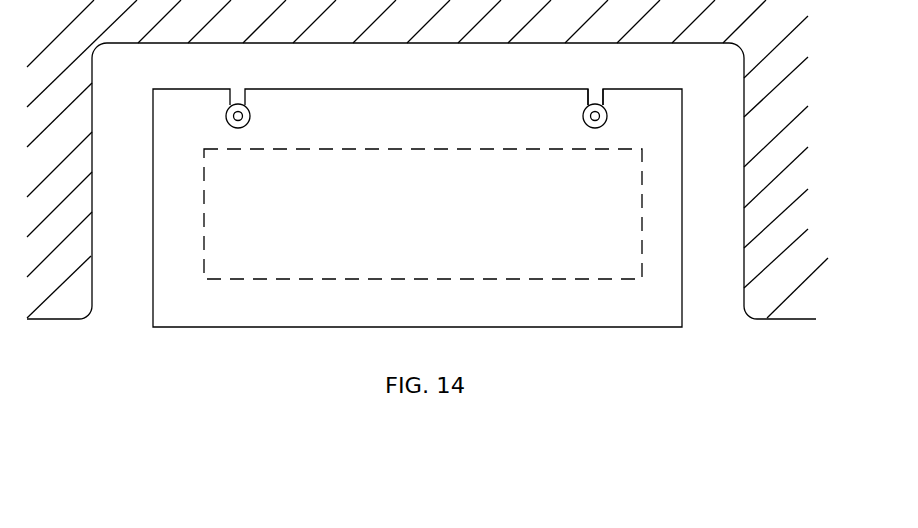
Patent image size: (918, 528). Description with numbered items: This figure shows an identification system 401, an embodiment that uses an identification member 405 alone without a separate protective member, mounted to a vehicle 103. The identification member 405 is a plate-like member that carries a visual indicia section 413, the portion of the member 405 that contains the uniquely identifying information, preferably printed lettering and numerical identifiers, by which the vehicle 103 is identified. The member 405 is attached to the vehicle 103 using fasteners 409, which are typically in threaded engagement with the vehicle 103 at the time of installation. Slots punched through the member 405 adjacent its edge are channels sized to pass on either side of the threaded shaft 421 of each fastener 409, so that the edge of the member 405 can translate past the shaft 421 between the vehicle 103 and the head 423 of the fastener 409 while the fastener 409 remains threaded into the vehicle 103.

The vehicle 103 is at (312, 22).
The identification system 401 is at (398, 236).
The identification member 405 is at (412, 90).
The fastener 409 is at (627, 122).
The visual indicia section 413 is at (485, 280).
The threaded shaft 421 is at (585, 117).
The head 423 is at (229, 121).